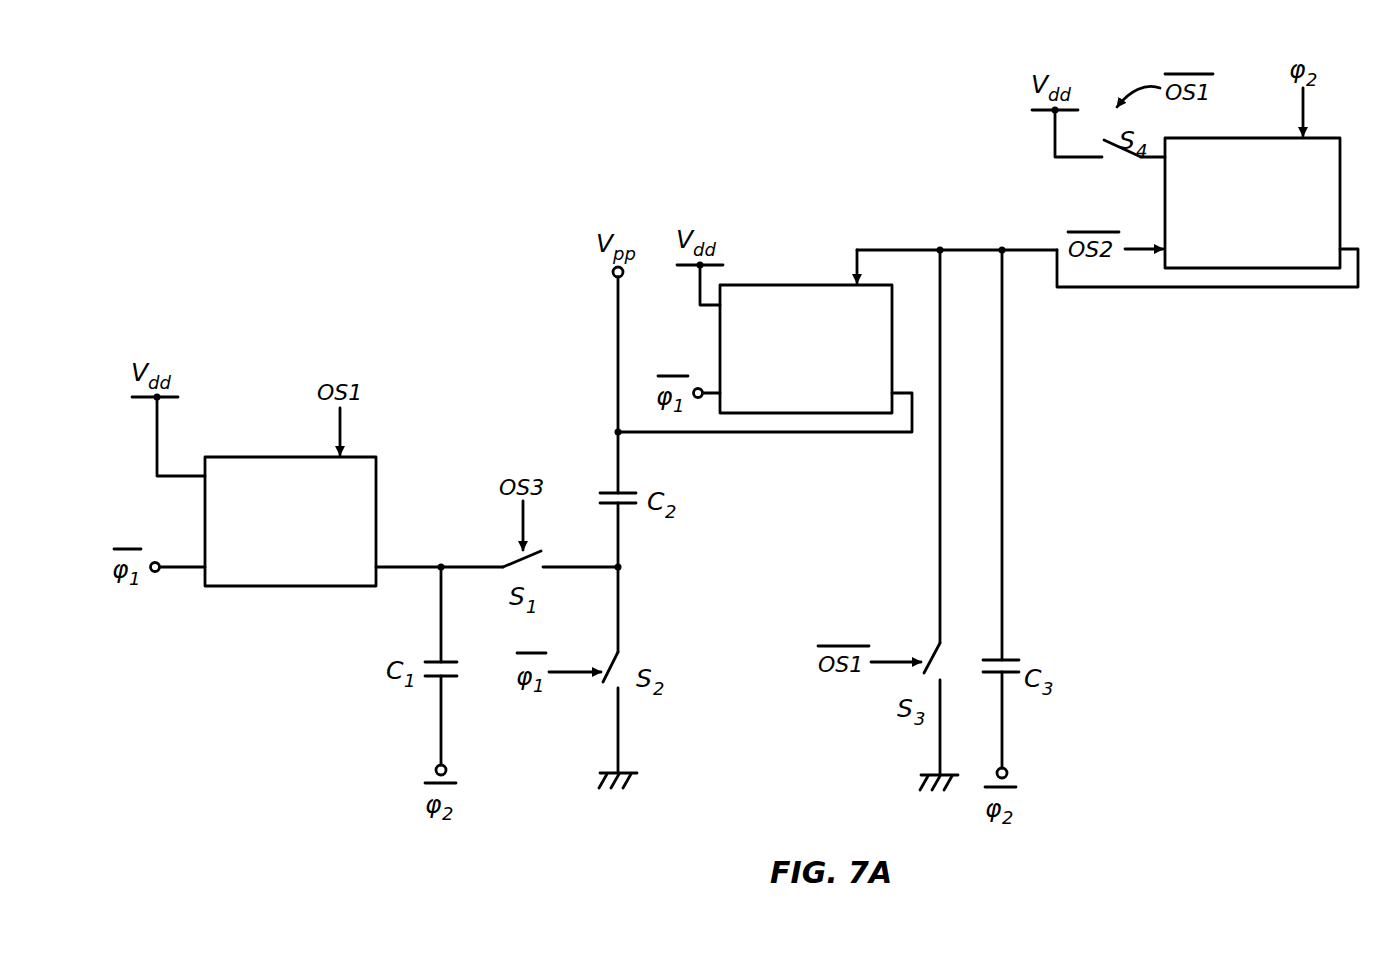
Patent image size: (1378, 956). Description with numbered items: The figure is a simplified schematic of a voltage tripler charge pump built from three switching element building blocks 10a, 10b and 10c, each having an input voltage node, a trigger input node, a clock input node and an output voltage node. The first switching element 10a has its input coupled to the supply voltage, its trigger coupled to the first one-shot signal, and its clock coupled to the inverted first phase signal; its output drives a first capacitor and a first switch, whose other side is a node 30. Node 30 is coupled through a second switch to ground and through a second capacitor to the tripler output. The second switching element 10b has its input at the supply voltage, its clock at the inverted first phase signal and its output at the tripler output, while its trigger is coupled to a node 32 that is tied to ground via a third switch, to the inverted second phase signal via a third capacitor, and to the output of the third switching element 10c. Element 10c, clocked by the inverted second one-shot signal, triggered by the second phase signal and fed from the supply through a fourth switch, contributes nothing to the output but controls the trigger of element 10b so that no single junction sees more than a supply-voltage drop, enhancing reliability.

The switching element 10a is at (306, 535).
The second switching element 10b is at (822, 362).
The third switching element 10c is at (1269, 215).
The node 30 is at (620, 564).
The node 32 is at (923, 250).